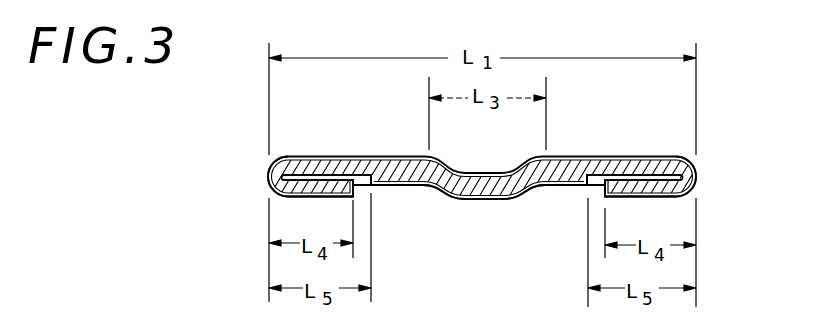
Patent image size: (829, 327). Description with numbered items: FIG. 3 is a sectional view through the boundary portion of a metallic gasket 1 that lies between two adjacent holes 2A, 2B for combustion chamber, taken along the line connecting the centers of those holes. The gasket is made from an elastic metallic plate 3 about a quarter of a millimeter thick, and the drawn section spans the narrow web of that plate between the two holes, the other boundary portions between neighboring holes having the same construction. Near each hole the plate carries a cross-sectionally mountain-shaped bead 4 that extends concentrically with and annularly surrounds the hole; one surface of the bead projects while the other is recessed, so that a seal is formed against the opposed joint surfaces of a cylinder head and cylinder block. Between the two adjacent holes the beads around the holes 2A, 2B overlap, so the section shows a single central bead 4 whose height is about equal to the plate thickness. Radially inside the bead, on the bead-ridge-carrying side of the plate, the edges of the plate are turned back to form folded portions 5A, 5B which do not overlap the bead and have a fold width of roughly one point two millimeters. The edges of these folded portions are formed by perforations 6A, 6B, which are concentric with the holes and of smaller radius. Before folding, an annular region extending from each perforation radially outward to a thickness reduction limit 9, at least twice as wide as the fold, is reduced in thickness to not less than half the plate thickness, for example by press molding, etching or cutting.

The metallic gasket 1 is at (512, 203).
The hole for combustion chamber 2A is at (267, 177).
The hole for combustion chamber 2B is at (698, 175).
The elastic metallic plate 3 is at (570, 158).
The bead 4 is at (464, 200).
The folded portion 5A is at (295, 193).
The folded portion 5B is at (668, 190).
The perforation 6A is at (357, 178).
The perforation 6B is at (598, 173).
The thickness reduction limit 9 is at (371, 194).